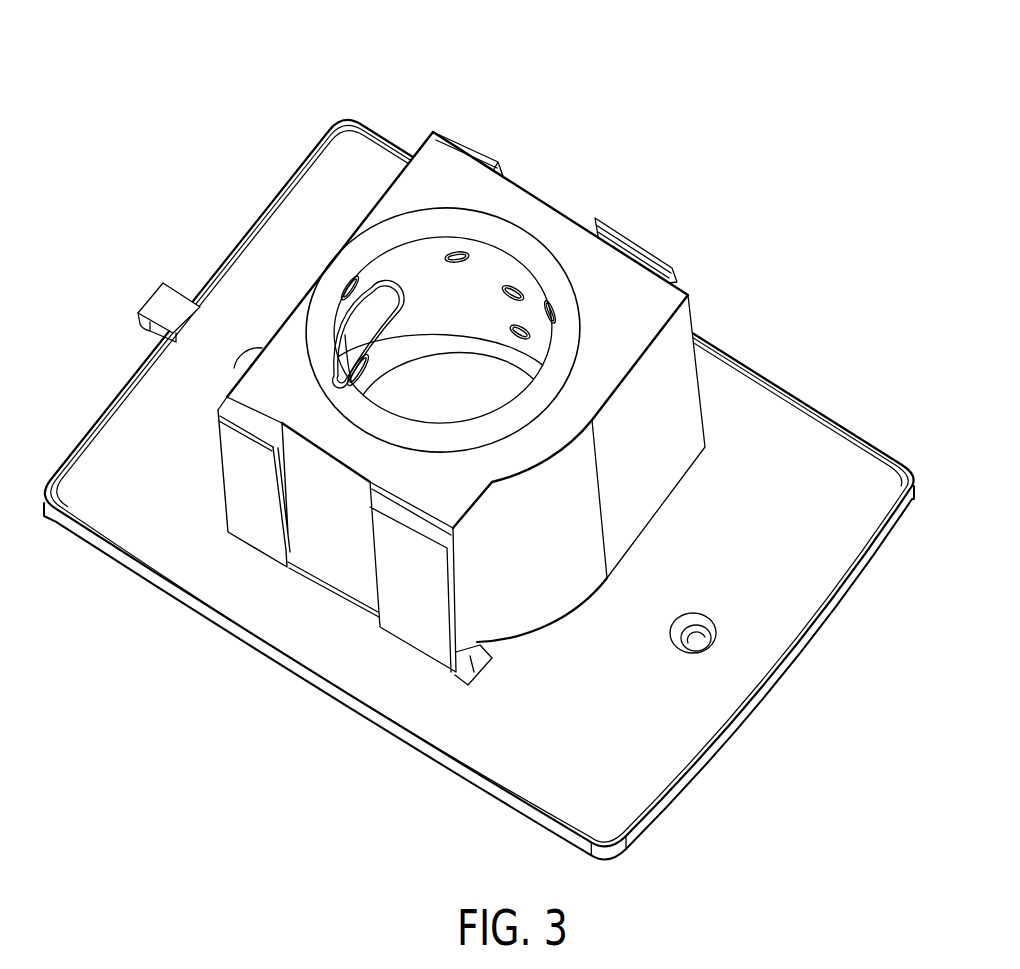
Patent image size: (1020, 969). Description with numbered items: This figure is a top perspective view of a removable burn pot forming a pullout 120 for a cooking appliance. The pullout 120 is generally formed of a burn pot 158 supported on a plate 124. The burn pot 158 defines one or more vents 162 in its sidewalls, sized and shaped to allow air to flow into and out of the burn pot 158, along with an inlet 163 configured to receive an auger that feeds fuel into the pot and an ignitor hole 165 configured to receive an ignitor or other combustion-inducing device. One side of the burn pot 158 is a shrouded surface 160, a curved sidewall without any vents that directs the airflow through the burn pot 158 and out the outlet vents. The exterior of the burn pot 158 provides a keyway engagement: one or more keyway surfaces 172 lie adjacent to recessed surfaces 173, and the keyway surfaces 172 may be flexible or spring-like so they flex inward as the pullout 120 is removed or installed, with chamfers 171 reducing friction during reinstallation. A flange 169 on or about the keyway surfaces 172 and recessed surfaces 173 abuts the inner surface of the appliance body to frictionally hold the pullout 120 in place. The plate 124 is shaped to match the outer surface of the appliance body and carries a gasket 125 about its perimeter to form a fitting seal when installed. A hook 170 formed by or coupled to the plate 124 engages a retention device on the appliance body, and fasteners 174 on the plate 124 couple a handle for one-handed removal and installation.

The pullout 120 is at (554, 84).
The plate 124 is at (777, 407).
The gasket 125 is at (883, 437).
The burn pot 158 is at (547, 220).
The shrouded surface 160 is at (588, 535).
The vents 162 is at (522, 297).
The inlet 163 is at (387, 292).
The ignitor hole 165 is at (357, 377).
The flange 169 is at (467, 682).
The hook 170 is at (167, 285).
The chamfers 171 is at (608, 235).
The keyway surfaces 172 is at (440, 130).
The recessed surfaces 173 is at (344, 522).
The fasteners 174 is at (695, 640).